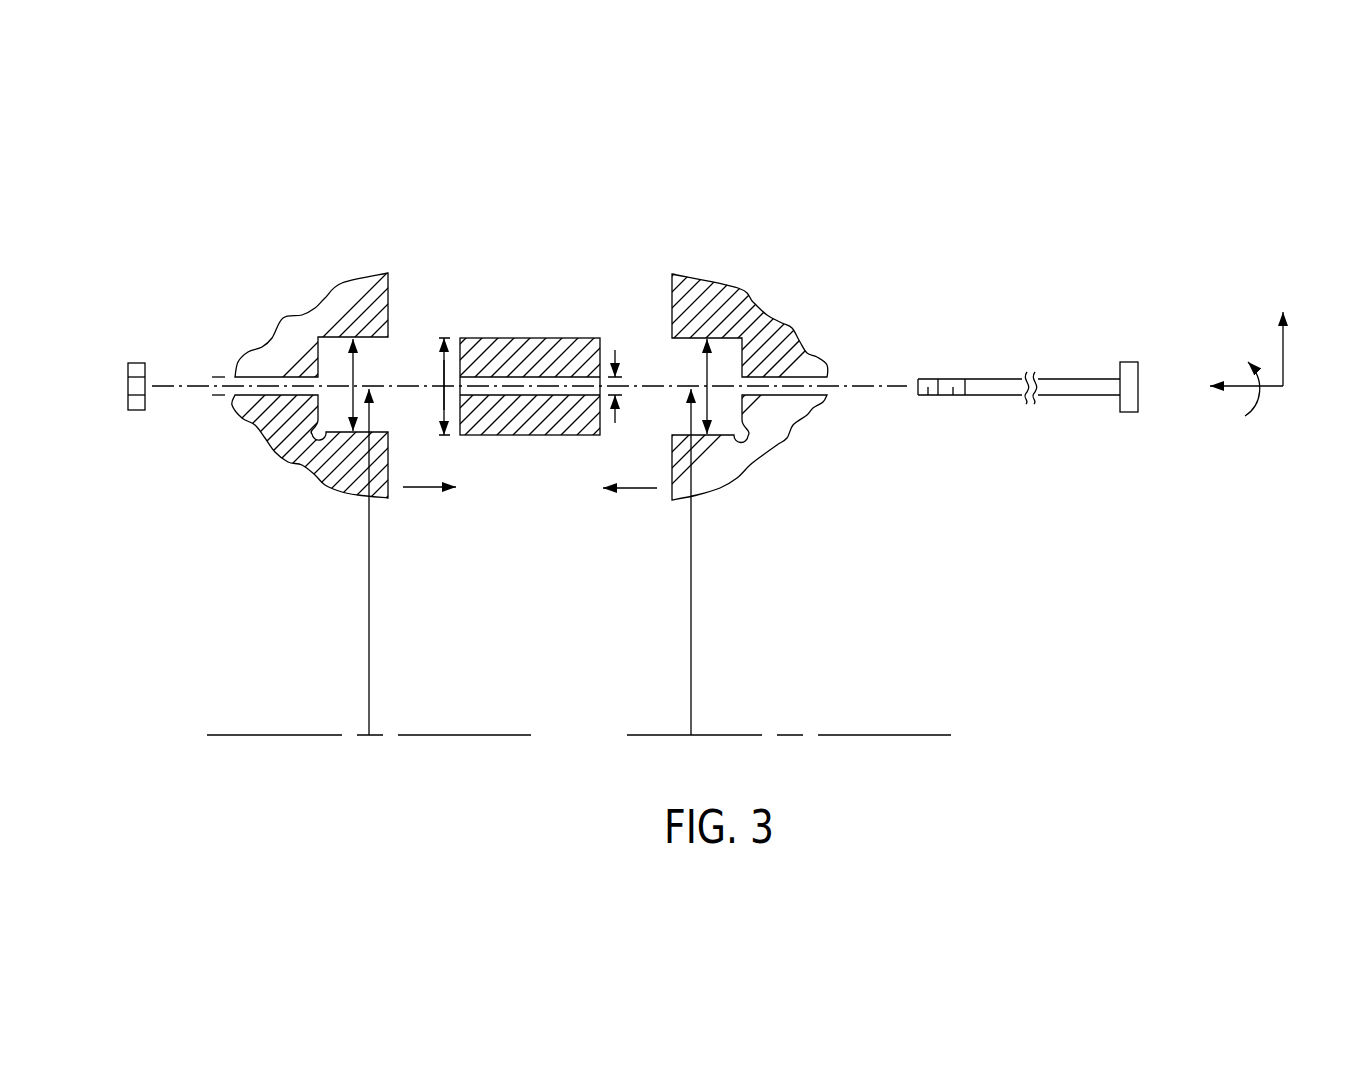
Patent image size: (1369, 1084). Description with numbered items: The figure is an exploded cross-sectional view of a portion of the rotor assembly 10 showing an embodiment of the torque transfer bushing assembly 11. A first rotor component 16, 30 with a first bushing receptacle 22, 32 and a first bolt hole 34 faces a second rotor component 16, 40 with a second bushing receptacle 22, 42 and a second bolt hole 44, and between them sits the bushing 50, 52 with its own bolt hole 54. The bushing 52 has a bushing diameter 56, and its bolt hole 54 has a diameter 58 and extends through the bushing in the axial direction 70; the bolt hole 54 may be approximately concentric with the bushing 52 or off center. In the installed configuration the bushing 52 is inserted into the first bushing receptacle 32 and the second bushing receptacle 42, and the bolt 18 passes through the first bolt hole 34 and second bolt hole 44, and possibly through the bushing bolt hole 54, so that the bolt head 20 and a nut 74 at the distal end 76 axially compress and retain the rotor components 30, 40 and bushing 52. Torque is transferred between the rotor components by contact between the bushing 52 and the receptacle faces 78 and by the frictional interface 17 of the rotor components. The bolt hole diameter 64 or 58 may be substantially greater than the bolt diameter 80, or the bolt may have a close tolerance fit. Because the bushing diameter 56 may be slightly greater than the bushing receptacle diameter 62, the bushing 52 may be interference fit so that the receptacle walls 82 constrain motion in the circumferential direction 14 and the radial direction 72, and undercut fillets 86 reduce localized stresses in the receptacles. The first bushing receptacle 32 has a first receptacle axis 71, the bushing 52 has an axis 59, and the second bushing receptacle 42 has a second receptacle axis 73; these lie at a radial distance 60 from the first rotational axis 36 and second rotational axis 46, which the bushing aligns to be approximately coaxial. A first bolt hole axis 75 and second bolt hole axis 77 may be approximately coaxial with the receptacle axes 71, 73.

The rotor assembly 10 is at (635, 186).
The torque transfer bushing assembly 11 is at (635, 243).
The circumferential direction 14 is at (1245, 416).
The rotor component 16 is at (294, 480).
The frictional interface 17 is at (393, 494).
The bolt 18 is at (1077, 378).
The bolt head 20 is at (1128, 412).
The bushing receptacle 22 is at (442, 325).
The first rotor component 30 is at (271, 331).
The first bushing receptacle 32 is at (388, 339).
The first bolt hole 34 is at (218, 396).
The first rotational axis 36 is at (360, 735).
The second rotor component 40 is at (788, 332).
The second bushing receptacle 42 is at (666, 340).
The second bolt hole 44 is at (822, 418).
The second rotational axis 46 is at (788, 735).
The bushing 50 is at (506, 333).
The bushing 52 is at (533, 338).
The bolt hole 54 is at (567, 398).
The bushing diameter 56 is at (442, 404).
The bolt hole diameter 58 is at (619, 418).
The bushing axis 59 is at (489, 388).
The radial distance 60 is at (371, 597).
The bushing receptacle diameter 62 is at (330, 410).
The bolt hole diameter 64 is at (218, 376).
The axial direction 70 is at (1270, 388).
The first receptacle axis 71 is at (432, 384).
The radial direction 72 is at (1285, 351).
The second receptacle axis 73 is at (676, 386).
The nut 74 is at (136, 362).
The first bolt hole axis 75 is at (180, 387).
The distal end 76 is at (918, 396).
The second bolt hole axis 77 is at (820, 360).
The receptacle face 78 is at (531, 386).
The bolt diameter 80 is at (972, 423).
The receptacle wall 82 is at (390, 431).
The undercut fillet 86 is at (314, 328).